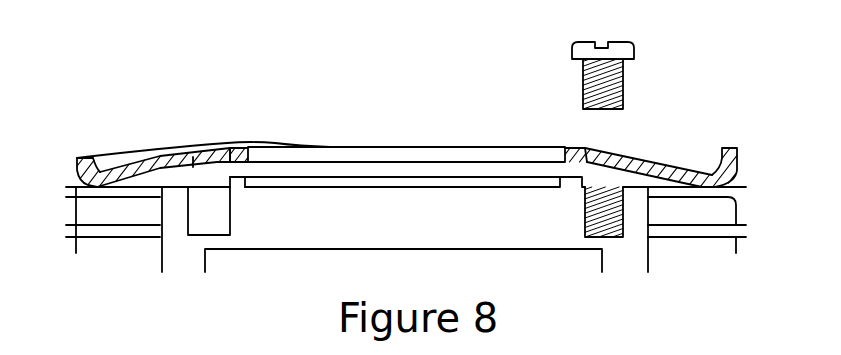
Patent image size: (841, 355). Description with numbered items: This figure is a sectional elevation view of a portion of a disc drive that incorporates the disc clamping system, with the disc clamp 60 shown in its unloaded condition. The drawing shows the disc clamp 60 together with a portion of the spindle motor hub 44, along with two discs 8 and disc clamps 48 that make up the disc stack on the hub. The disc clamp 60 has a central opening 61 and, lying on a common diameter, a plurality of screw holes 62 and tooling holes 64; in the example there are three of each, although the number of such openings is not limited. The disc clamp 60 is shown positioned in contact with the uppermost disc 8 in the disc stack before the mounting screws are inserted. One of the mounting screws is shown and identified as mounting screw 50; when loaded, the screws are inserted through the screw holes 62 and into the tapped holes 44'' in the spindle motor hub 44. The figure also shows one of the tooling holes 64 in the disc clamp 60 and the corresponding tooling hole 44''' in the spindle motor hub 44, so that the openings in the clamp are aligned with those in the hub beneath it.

The disc 8 is at (77, 190).
The disc clamp 48 is at (135, 213).
The tooling hole 44''' is at (153, 156).
The tooling hole 64 is at (217, 152).
The disc clamp 60 is at (243, 142).
The central opening 61 is at (515, 152).
The spindle motor hub 44 is at (403, 174).
The mounting screw 50 is at (573, 43).
The screw hole 62 is at (605, 157).
The tapped hole 44'' is at (693, 181).